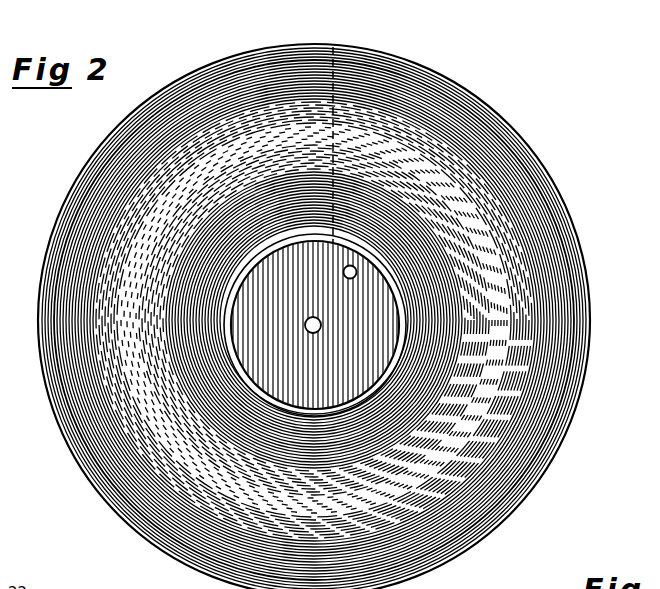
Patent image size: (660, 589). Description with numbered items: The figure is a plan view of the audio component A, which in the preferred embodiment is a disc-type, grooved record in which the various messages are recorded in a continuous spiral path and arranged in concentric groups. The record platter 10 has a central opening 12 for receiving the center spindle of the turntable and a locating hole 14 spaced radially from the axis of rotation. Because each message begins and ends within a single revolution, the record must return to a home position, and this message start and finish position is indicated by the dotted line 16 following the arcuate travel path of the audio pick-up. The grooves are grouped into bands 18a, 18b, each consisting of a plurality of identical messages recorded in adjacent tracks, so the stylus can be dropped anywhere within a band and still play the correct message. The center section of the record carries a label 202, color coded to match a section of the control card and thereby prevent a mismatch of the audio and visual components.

The record platter 10 is at (578, 233).
The central opening 12 is at (313, 334).
The locating hole 14 is at (350, 279).
The dotted line 16 is at (334, 48).
The band 18a is at (426, 113).
The band 18b is at (412, 88).
The label 202 is at (306, 289).
The audio component A is at (531, 148).